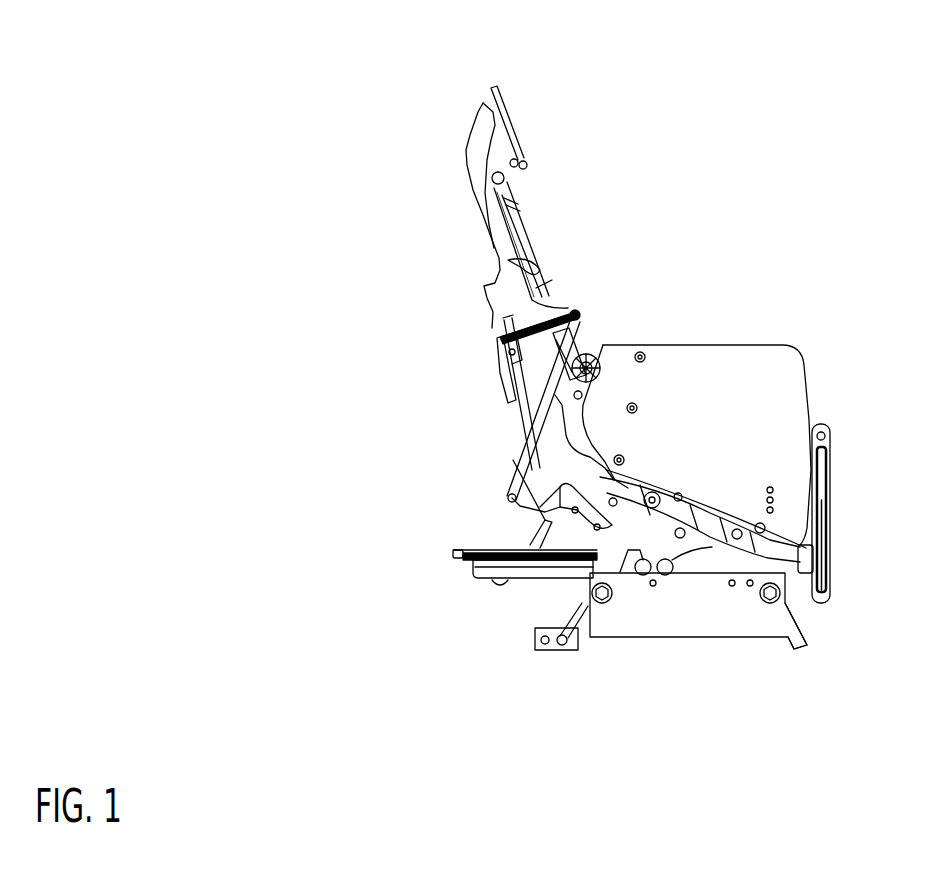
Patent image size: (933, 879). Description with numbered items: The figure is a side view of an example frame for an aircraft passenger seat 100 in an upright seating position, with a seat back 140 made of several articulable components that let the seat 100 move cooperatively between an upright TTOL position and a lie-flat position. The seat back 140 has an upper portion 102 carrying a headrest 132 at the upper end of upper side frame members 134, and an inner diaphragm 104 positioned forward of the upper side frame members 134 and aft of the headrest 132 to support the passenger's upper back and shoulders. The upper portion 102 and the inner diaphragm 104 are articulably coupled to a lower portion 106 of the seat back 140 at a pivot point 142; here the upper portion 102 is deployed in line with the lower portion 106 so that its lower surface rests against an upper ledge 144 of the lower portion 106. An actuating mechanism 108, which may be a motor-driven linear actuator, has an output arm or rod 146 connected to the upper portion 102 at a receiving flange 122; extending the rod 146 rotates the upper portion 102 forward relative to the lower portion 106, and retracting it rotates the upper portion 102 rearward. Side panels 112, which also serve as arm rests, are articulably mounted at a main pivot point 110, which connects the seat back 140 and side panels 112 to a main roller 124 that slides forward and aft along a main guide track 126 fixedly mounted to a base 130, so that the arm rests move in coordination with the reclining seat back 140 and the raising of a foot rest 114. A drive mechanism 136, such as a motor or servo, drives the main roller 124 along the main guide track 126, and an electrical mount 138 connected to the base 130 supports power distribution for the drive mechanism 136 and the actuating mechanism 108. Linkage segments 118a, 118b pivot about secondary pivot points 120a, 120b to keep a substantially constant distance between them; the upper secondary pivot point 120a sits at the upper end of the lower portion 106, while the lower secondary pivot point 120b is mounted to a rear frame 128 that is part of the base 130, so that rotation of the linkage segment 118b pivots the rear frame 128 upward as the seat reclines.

The aircraft passenger seat 100 is at (401, 47).
The upper portion 102 is at (465, 160).
The inner diaphragm 104 is at (527, 240).
The lower portion 106 is at (550, 353).
The actuating mechanism 108 is at (537, 397).
The main pivot point 110 is at (601, 345).
The side panels 112 is at (712, 372).
The foot rest 114 is at (830, 487).
The linkage segment 118a is at (515, 472).
The linkage segment 118b is at (537, 508).
The upper secondary pivot point 120a is at (583, 322).
The lower secondary pivot point 120b is at (567, 500).
The receiving flange 122 is at (500, 337).
The main roller 124 is at (653, 500).
The main guide track 126 is at (727, 543).
The rear frame 128 is at (574, 500).
The base 130 is at (775, 628).
The headrest 132 is at (510, 130).
The upper side frame members 134 is at (493, 245).
The drive mechanism 136 is at (549, 565).
The electrical mount 138 is at (512, 487).
The seat back 140 is at (612, 152).
The pivot point 142 is at (572, 310).
The upper ledge 144 is at (505, 338).
The output arm or rod 146 is at (528, 450).